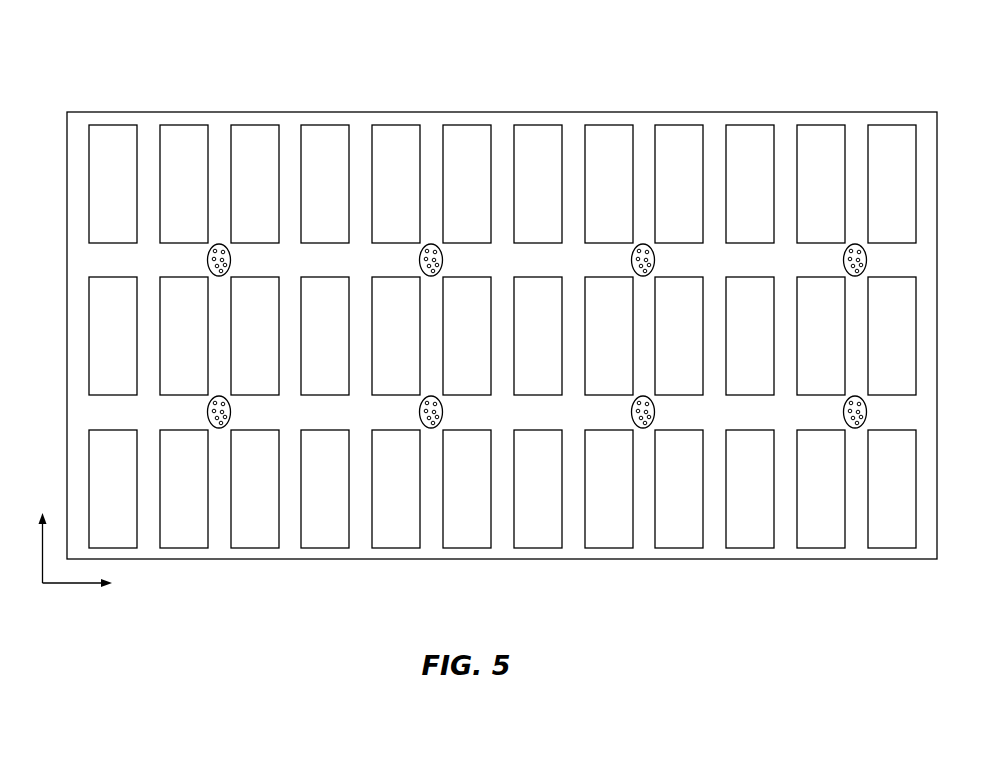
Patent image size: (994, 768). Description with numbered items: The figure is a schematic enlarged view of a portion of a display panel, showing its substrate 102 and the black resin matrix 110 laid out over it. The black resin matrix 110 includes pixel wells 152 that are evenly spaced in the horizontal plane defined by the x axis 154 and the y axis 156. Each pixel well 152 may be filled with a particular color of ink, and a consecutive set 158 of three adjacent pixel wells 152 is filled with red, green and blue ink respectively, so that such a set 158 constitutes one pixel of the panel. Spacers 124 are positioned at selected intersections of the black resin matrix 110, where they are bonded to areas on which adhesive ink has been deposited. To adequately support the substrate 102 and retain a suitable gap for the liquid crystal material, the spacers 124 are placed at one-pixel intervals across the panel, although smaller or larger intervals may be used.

The substrate 102 is at (506, 71).
The black resin matrix 110 is at (927, 561).
The spacer 124 is at (443, 410).
The pixel well 152 is at (322, 125).
The x axis of horizontal x-y plane 154 is at (67, 583).
The y axis of horizontal x-y plane 156 is at (43, 533).
The consecutive set of three adjacent pixel wells 158 is at (643, 125).